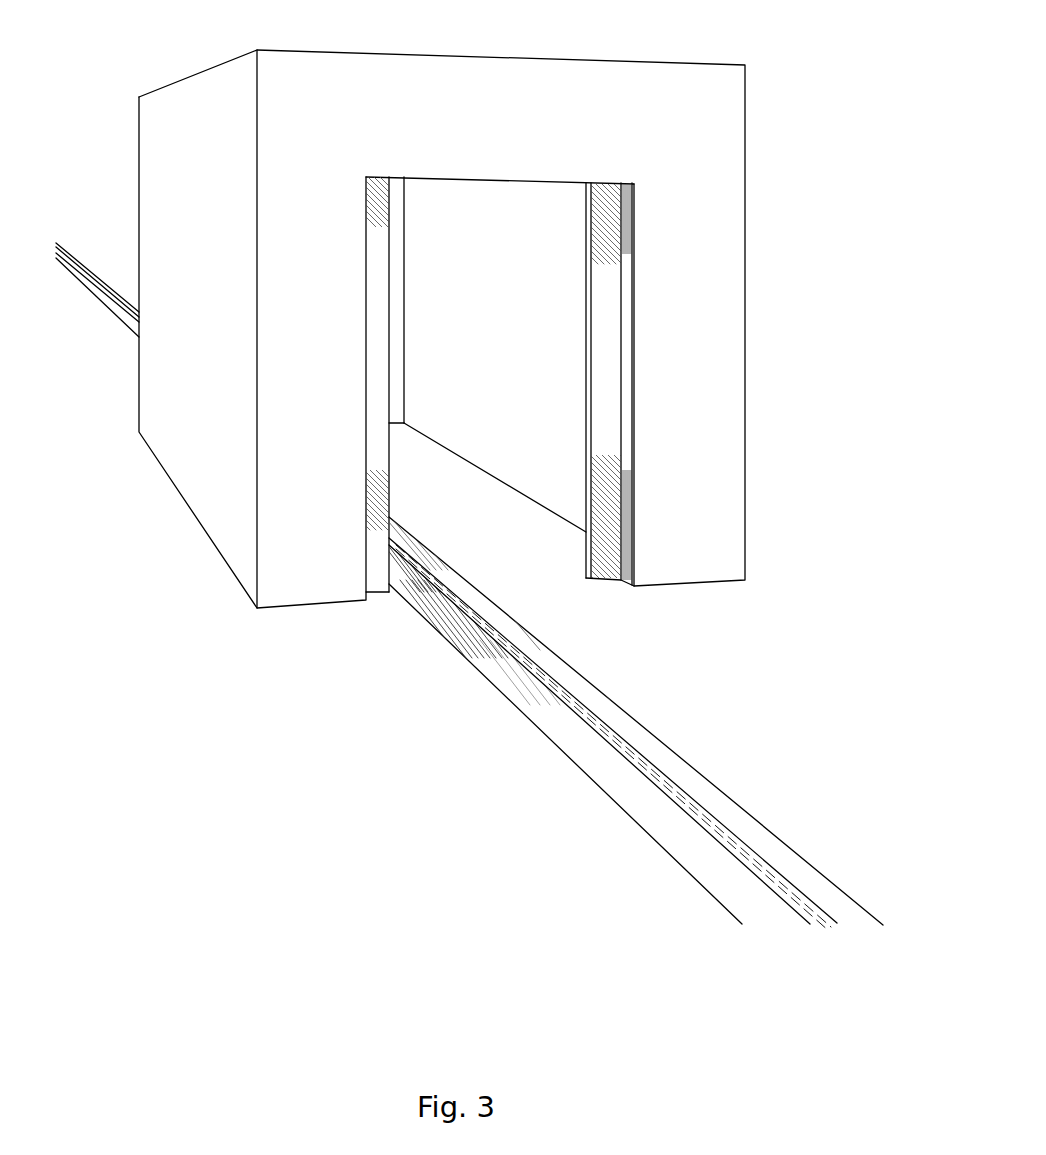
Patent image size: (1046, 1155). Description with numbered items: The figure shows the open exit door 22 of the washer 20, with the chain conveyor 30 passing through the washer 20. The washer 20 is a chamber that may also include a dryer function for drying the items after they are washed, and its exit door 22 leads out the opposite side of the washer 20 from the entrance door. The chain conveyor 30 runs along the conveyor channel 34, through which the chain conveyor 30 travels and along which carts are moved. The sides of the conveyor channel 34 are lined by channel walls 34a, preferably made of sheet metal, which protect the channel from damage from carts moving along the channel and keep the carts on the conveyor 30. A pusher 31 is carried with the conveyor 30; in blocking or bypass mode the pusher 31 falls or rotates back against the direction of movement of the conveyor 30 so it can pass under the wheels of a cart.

The washer 20 is at (372, 82).
The exit door 22 is at (378, 412).
The chain conveyor 30 is at (468, 623).
The pusher 31 is at (462, 602).
The conveyor channel 34 is at (620, 752).
The channel walls 34a is at (528, 692).